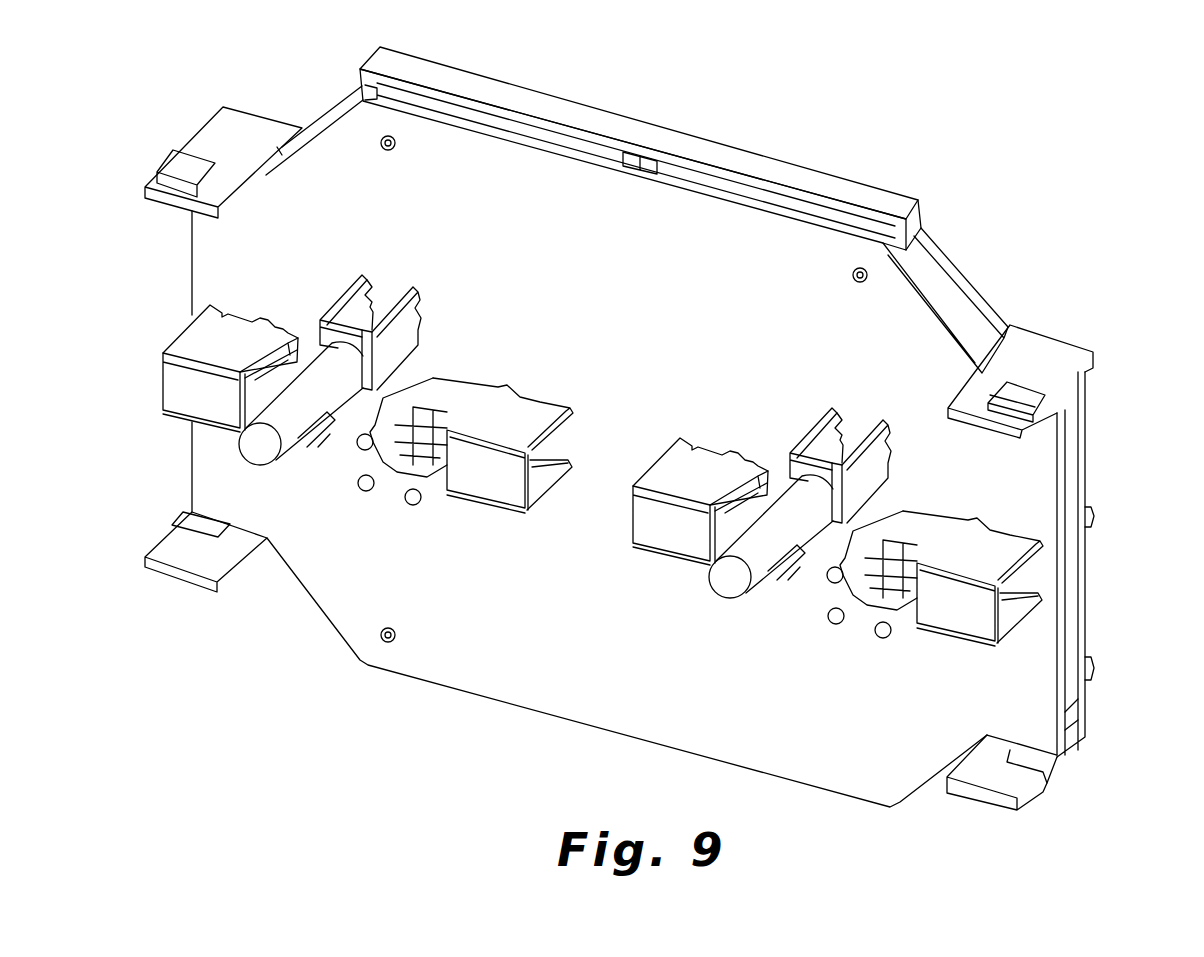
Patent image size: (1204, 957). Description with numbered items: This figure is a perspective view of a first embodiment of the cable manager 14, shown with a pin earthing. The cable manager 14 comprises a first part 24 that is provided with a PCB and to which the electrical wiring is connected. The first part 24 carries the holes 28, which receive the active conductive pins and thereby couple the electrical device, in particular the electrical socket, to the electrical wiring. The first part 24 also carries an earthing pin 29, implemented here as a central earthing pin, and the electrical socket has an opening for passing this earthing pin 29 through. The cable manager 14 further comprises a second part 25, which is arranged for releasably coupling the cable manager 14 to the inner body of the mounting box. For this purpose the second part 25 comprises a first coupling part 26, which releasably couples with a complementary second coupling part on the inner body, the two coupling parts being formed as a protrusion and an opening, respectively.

The cable manager 14 is at (668, 428).
The first part 24 is at (925, 340).
The second part 25 is at (982, 295).
The first coupling part 26 is at (1040, 400).
The holes 28 is at (327, 437).
The earthing pin 29 is at (313, 383).